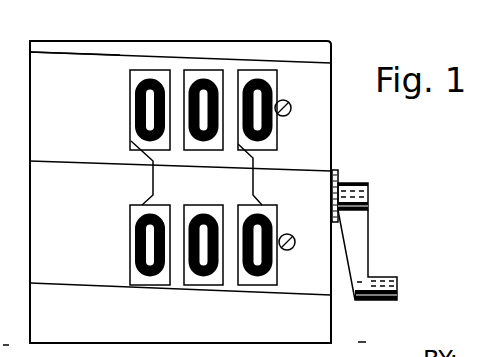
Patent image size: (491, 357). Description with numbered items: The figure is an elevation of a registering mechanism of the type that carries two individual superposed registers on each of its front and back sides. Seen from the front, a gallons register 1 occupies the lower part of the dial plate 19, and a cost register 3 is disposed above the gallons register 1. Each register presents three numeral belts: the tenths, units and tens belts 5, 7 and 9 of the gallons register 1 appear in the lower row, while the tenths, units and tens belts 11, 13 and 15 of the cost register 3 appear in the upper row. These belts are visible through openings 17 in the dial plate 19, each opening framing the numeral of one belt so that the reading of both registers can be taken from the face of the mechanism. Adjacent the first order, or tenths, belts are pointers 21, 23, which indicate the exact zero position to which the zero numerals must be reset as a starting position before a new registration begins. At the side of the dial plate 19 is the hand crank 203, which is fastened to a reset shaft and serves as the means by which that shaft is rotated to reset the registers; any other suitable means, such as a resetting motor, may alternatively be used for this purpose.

The gallons register 1 is at (170, 291).
The cost register 3 is at (210, 64).
The tenths belt 5 is at (262, 255).
The units belt 7 is at (203, 250).
The tens belt 9 is at (152, 247).
The tenths belt 11 is at (263, 80).
The units belt 13 is at (196, 78).
The tens belt 15 is at (151, 108).
The openings 17 is at (153, 183).
The dial plate 19 is at (106, 72).
The pointer 21 is at (290, 240).
The pointer 23 is at (286, 104).
The hand crank 203 is at (357, 233).